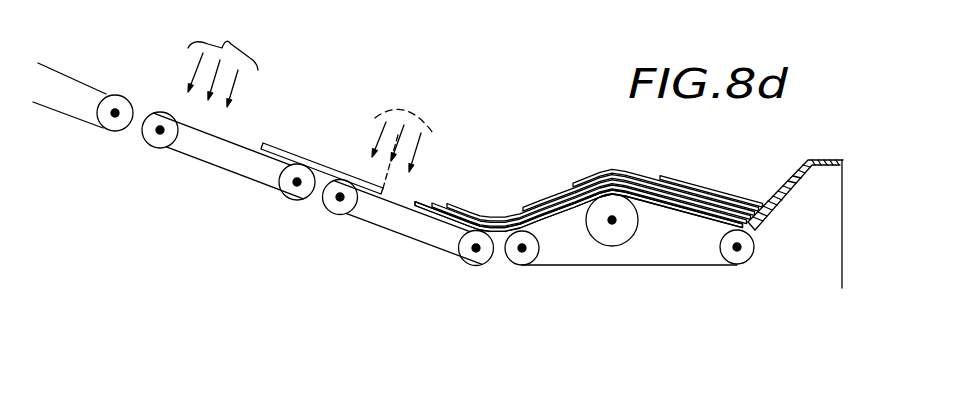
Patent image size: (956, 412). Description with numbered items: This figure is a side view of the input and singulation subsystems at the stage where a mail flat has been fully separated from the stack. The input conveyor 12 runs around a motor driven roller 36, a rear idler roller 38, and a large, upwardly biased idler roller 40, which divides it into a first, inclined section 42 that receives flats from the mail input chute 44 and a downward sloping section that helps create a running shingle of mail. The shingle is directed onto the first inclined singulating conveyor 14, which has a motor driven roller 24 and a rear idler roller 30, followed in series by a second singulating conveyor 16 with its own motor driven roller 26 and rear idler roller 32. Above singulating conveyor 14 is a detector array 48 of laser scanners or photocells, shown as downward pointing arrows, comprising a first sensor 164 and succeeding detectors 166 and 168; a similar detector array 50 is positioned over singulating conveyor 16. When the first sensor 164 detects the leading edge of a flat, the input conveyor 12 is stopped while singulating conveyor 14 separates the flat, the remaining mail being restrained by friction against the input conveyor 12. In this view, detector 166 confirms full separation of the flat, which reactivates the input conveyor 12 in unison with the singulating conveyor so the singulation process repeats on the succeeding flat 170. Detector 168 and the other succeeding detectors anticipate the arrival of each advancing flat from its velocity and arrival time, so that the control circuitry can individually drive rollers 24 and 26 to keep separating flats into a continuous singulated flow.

The input conveyor 12 is at (653, 267).
The singulating conveyor 14 is at (398, 240).
The singulating conveyor 16 is at (199, 163).
The motor driven roller 24 is at (334, 223).
The motor driven roller 26 is at (156, 148).
The rear idler roller 30 is at (468, 265).
The rear idler roller 32 is at (288, 198).
The motor driven roller 36 is at (522, 266).
The rear idler roller 38 is at (746, 259).
The upwardly biased idler roller 40 is at (611, 246).
The inclined section 42 is at (698, 224).
The mail input chute 44 is at (773, 198).
The detector array 48 is at (404, 137).
The detector array 50 is at (223, 60).
The first sensor 164 is at (420, 150).
The detector 166 is at (417, 133).
The detector 168 is at (374, 148).
The succeeding flat 170 is at (420, 200).